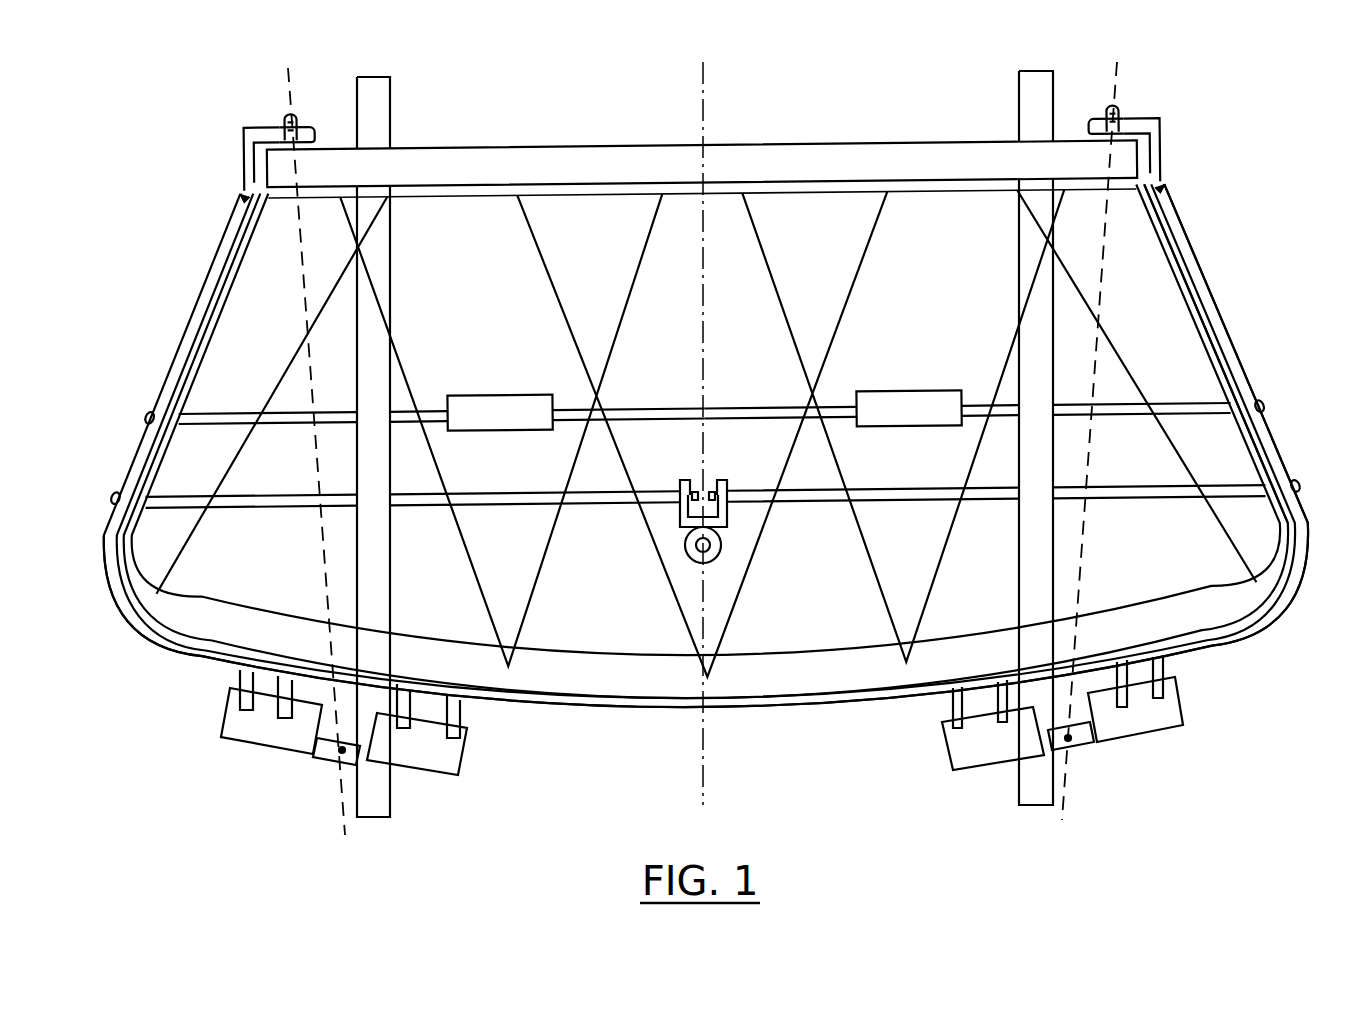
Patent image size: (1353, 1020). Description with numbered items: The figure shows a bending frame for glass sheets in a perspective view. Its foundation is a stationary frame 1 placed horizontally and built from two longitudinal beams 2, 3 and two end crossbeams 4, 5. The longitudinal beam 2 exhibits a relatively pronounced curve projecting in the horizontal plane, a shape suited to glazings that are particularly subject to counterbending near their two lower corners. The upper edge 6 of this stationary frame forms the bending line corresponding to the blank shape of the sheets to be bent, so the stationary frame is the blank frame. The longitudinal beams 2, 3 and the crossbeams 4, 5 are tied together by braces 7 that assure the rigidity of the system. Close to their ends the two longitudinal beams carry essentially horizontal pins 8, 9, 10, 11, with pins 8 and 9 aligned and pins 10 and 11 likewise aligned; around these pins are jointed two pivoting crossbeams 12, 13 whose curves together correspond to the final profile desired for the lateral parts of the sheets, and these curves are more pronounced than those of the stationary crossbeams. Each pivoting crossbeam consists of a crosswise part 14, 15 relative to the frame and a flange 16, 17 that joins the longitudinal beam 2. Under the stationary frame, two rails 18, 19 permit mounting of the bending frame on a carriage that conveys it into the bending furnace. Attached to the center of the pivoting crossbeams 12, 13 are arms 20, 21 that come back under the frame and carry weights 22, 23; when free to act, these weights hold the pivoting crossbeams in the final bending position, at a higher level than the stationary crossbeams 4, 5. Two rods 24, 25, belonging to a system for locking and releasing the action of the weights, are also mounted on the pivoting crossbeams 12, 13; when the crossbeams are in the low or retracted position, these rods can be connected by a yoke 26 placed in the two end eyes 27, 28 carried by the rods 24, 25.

The stationary frame 1 is at (645, 680).
The longitudinal beam 2 is at (810, 687).
The longitudinal beam 3 is at (815, 150).
The end crossbeam 4 is at (215, 338).
The end crossbeam 5 is at (1215, 345).
The upper edge 6 is at (535, 708).
The braces 7 is at (650, 255).
The pin 8 is at (336, 756).
The pin 9 is at (297, 120).
The pin 10 is at (1074, 745).
The pin 11 is at (1125, 120).
The pivoting crossbeam 12 is at (190, 272).
The pivoting crossbeam 13 is at (1213, 295).
The crosswise part 14 is at (168, 372).
The crosswise part 15 is at (1240, 362).
The flange 16 is at (190, 655).
The flange 17 is at (1200, 640).
The rail 18 is at (390, 105).
The rail 19 is at (1050, 85).
The arm 20 is at (230, 420).
The arm 21 is at (1183, 412).
The weight 22 is at (490, 393).
The weight 23 is at (905, 393).
The rod 24 is at (300, 505).
The rod 25 is at (1128, 494).
The yoke 26 is at (727, 515).
The end eye 27 is at (682, 480).
The end eye 28 is at (726, 478).